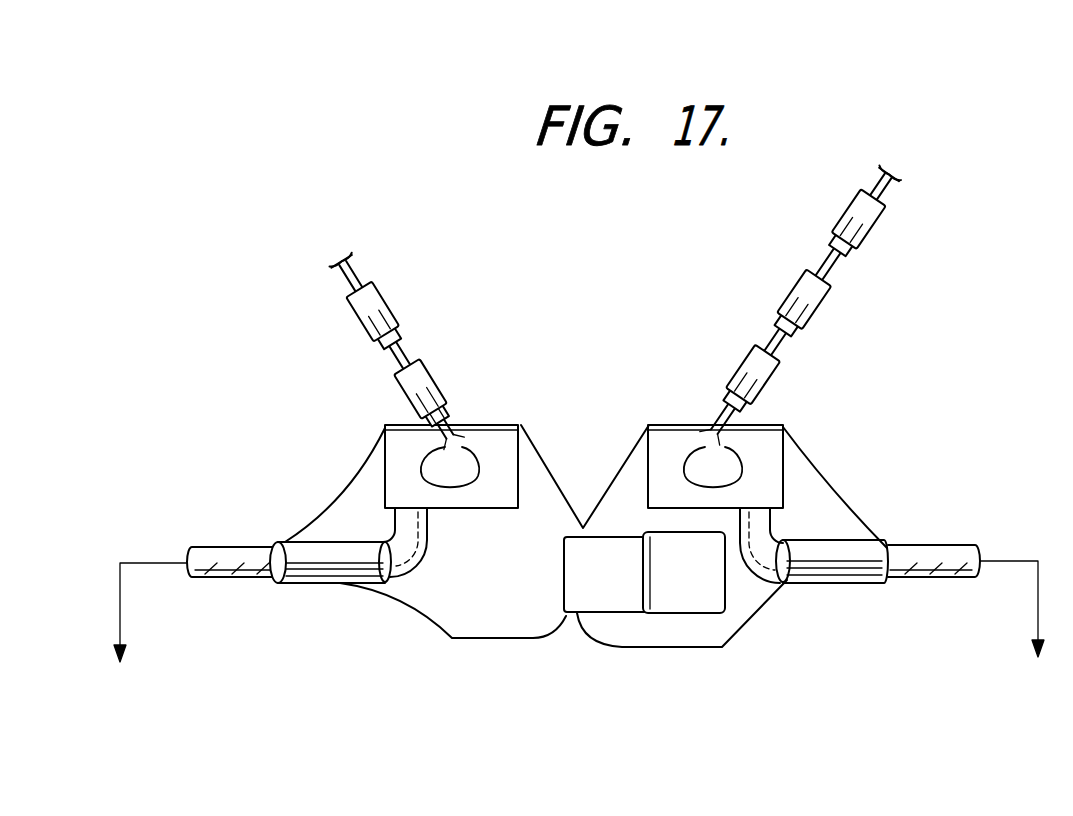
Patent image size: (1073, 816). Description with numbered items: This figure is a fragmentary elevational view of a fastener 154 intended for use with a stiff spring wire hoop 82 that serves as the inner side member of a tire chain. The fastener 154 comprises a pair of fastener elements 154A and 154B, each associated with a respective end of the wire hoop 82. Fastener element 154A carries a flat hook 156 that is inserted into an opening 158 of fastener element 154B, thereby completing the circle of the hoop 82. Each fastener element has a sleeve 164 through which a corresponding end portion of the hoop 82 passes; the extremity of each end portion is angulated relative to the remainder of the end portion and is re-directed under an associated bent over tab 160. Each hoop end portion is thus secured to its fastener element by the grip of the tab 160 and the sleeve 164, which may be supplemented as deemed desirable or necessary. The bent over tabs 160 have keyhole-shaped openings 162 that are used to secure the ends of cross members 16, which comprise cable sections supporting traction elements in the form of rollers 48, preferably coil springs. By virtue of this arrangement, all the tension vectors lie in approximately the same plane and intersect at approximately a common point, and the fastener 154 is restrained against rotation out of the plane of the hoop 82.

The cross member 16 is at (392, 343).
The roller 48 is at (430, 368).
The spring wire hoop 82 is at (233, 552).
The fastener 154 is at (586, 531).
The fastener element 154A is at (463, 612).
The fastener element 154B is at (667, 640).
The flat hook 156 is at (612, 600).
The opening 158 is at (702, 600).
The bent over tab 160 is at (390, 463).
The keyhole-shaped opening 162 is at (447, 480).
The sleeve 164 is at (325, 562).